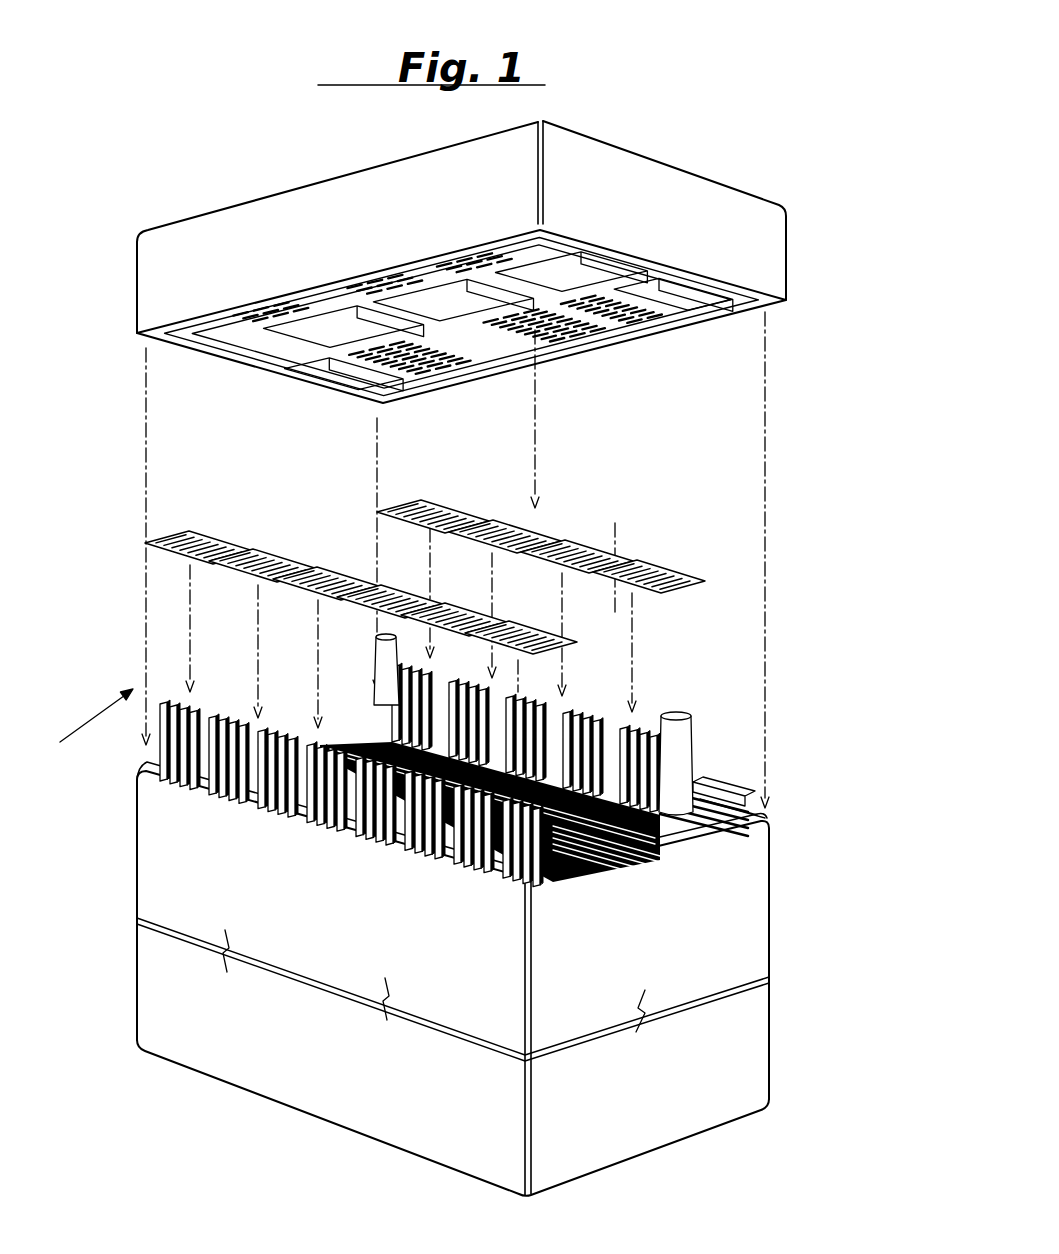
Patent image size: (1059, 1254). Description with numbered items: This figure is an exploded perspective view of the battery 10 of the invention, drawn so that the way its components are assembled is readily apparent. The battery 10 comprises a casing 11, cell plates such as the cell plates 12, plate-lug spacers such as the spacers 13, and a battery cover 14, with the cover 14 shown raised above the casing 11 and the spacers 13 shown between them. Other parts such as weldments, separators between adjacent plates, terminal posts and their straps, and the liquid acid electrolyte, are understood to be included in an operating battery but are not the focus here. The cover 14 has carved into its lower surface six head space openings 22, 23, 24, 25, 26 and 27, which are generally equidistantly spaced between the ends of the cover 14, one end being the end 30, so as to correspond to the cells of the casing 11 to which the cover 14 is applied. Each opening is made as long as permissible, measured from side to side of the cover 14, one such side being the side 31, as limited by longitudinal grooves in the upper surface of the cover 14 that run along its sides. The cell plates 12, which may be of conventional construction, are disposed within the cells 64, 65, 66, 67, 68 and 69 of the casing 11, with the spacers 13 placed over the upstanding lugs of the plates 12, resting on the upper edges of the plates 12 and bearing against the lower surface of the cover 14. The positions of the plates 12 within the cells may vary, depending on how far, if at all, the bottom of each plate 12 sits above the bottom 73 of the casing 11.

The battery 10 is at (87, 727).
The casing 11 is at (165, 872).
The cell plates 12 is at (648, 836).
The plate-lug spacers 13 is at (648, 565).
The battery cover 14 is at (429, 262).
The head space opening 22 is at (302, 364).
The head space opening 23 is at (385, 354).
The head space opening 24 is at (480, 344).
The head space opening 25 is at (549, 326).
The head space opening 26 is at (618, 322).
The head space opening 27 is at (653, 289).
The end of the cover 30 is at (688, 205).
The side of the cover 31 is at (373, 213).
The cell 64 is at (150, 774).
The cell 65 is at (240, 794).
The cell 66 is at (302, 813).
The cell 67 is at (370, 833).
The cell 68 is at (433, 848).
The cell 69 is at (498, 867).
The bottom of the casing 73 is at (694, 1136).